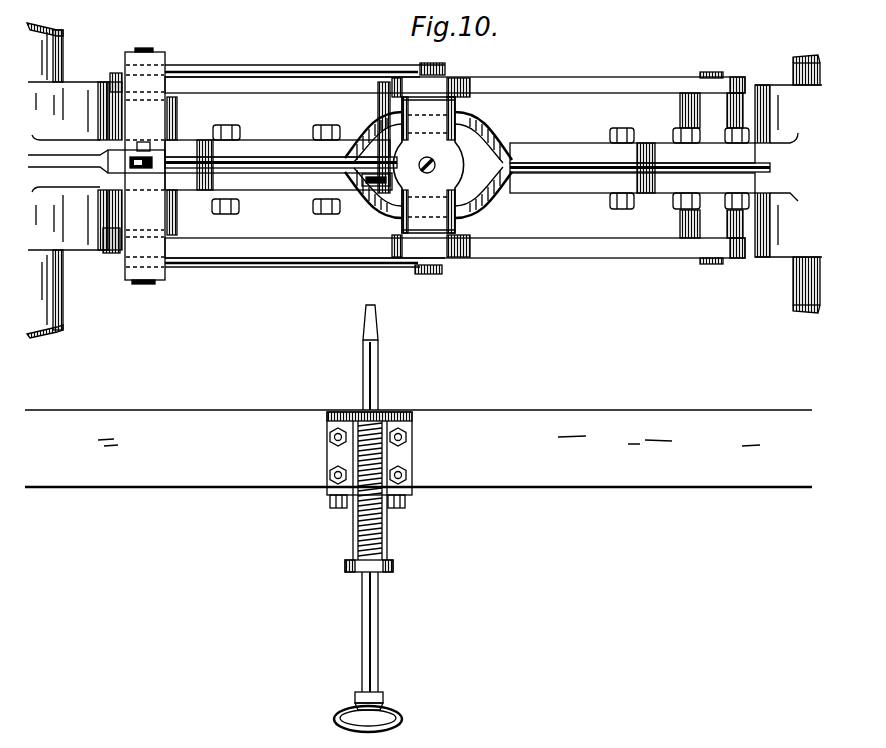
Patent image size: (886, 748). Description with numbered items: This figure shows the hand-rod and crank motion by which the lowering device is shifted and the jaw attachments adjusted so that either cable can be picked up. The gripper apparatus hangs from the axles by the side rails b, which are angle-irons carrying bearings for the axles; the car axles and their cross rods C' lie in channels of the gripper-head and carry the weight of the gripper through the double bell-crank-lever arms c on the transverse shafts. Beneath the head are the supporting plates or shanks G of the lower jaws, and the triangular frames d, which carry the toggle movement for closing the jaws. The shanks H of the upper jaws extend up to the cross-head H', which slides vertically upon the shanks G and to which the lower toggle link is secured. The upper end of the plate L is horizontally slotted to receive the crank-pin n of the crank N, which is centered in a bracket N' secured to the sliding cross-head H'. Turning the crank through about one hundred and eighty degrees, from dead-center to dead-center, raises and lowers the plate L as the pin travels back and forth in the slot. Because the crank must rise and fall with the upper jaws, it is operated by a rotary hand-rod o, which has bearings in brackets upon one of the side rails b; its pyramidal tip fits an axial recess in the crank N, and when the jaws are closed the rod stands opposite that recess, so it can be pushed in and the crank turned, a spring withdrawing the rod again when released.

The cross rods C' is at (424, 180).
The double bell-crank-lever arms c is at (467, 175).
The supporting plates or shanks for the lower jaws G is at (206, 170).
The supporting plates or shanks of the upper jaws H is at (455, 168).
The cross-head H' is at (460, 169).
The plate L is at (330, 160).
The crank-pin n is at (380, 109).
The crank N is at (428, 173).
The bracket N' is at (329, 198).
The triangular frames d is at (428, 165).
The side rails b is at (418, 448).
The hand-rod o is at (383, 605).